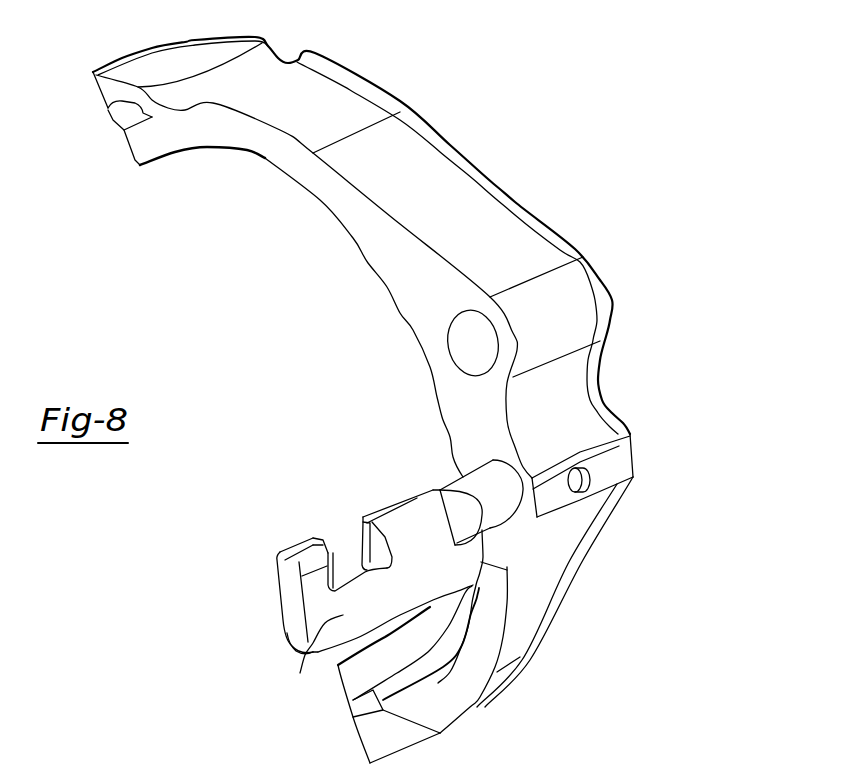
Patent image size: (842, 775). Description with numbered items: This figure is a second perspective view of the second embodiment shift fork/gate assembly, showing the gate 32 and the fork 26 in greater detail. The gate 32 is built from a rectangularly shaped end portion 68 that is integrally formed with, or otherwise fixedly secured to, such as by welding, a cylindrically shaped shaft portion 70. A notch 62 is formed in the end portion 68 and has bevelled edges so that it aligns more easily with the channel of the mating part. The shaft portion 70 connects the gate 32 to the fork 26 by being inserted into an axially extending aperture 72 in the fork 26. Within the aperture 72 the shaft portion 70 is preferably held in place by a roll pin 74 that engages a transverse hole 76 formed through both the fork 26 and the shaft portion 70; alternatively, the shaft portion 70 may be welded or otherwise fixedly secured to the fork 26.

The fork 26 is at (465, 193).
The gate 32 is at (287, 610).
The notch 62 is at (344, 529).
The end portion 68 is at (315, 648).
The shaft portion 70 is at (473, 470).
The aperture 72 is at (522, 507).
The roll pin 74 is at (590, 480).
The transverse hole 76 is at (590, 462).